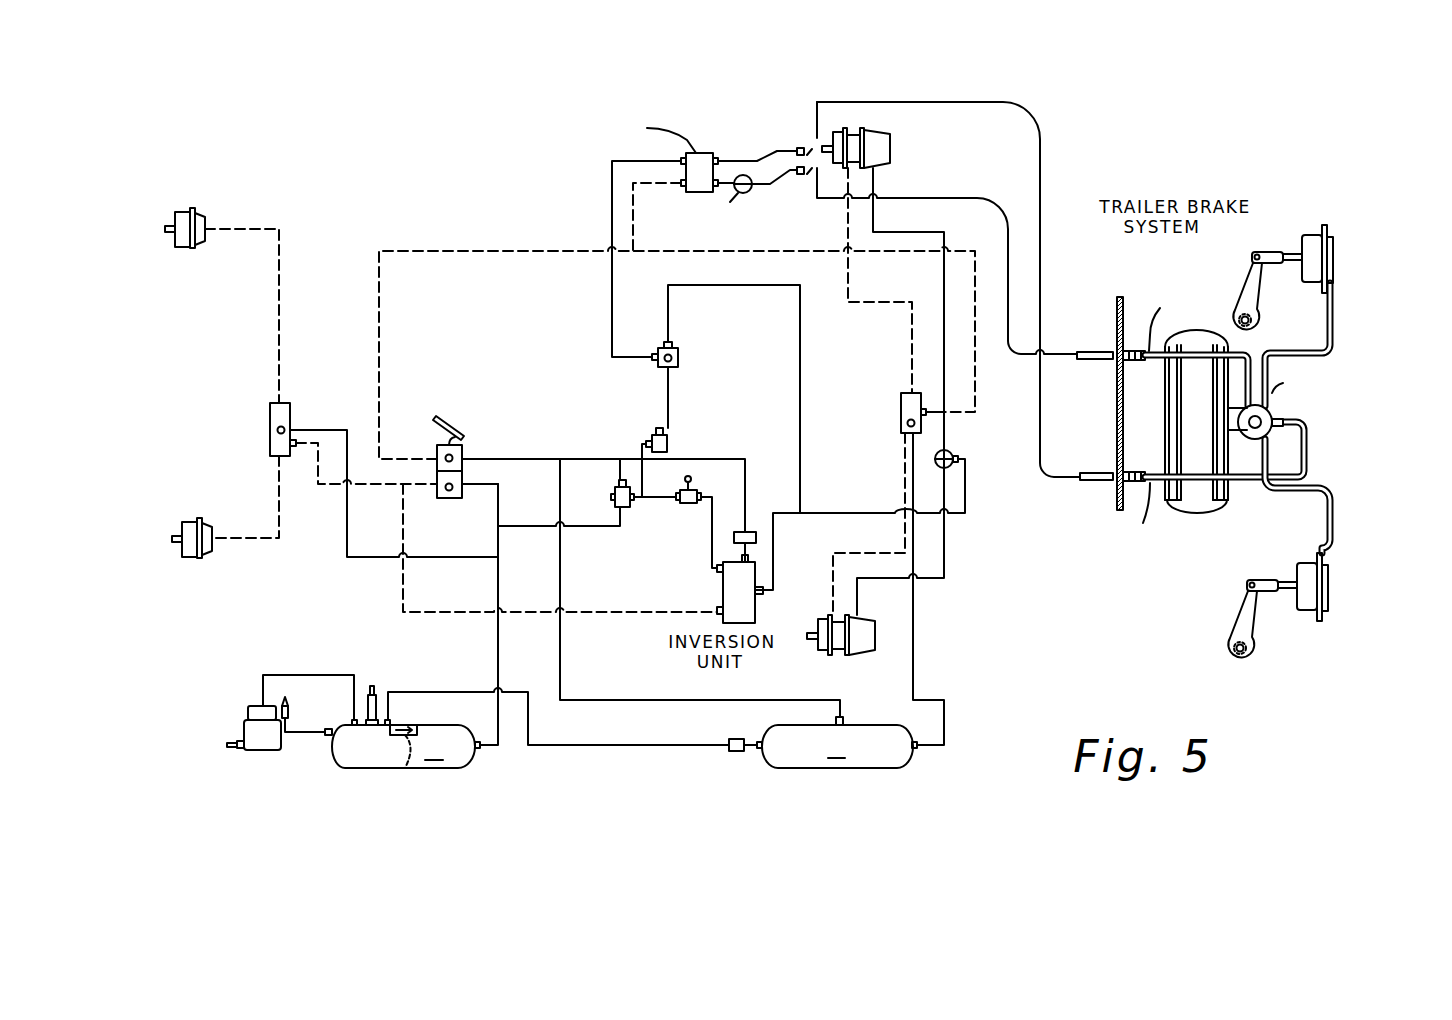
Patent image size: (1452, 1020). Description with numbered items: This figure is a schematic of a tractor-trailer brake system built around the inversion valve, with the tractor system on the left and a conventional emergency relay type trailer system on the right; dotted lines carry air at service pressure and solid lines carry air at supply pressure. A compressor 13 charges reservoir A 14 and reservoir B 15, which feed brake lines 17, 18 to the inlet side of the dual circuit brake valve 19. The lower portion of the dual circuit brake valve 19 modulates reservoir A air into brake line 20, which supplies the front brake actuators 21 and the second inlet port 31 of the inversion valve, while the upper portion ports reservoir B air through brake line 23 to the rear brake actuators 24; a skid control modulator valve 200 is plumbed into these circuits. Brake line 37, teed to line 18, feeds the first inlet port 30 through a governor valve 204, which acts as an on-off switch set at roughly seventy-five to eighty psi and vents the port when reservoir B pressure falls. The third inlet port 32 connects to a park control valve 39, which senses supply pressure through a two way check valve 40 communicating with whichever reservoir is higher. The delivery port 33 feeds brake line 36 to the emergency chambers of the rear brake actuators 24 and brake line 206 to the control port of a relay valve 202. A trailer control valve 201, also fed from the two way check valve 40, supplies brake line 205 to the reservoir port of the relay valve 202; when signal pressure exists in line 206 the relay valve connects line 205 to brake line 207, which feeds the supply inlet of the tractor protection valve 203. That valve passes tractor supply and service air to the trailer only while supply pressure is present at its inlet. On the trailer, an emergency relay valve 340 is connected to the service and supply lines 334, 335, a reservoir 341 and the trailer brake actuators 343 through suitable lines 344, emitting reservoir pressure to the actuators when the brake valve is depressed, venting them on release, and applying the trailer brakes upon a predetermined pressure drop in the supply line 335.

The compressor 13 is at (274, 750).
The reservoir "A" 14 is at (456, 768).
The reservoir "B" 15 is at (865, 768).
The brake line 17 is at (538, 528).
The brake line 18 is at (627, 700).
The dual circuit brake valve 19 is at (462, 440).
The brake line 20 is at (378, 487).
The front brake actuators 21 is at (201, 213).
The brake line 23 is at (381, 305).
The rear brake actuators 24 is at (893, 148).
The first inlet port 30 is at (748, 550).
The second inlet port 31 is at (717, 610).
The third inlet port 32 is at (717, 568).
The delivery port 33 is at (763, 592).
The brake line 36 is at (862, 513).
The brake line 37 is at (745, 460).
The park control valve 39 is at (697, 490).
The two way check valve 40 is at (611, 497).
The skid control modulator valve 200 is at (268, 456).
The trailer control valve 201 is at (667, 446).
The relay valve 202 is at (660, 346).
The tractor protection valve 203 is at (714, 153).
The governor valve 204 is at (752, 532).
The brake line 205 is at (670, 395).
The brake line 206 is at (760, 285).
The brake line 207 is at (612, 297).
The service line 334 is at (1097, 352).
The supply line 335 is at (1099, 473).
The emergency relay valve 340 is at (1287, 437).
The reservoir 341 is at (1233, 498).
The trailer brake actuators 343 is at (1333, 232).
The lines 344 is at (1340, 532).